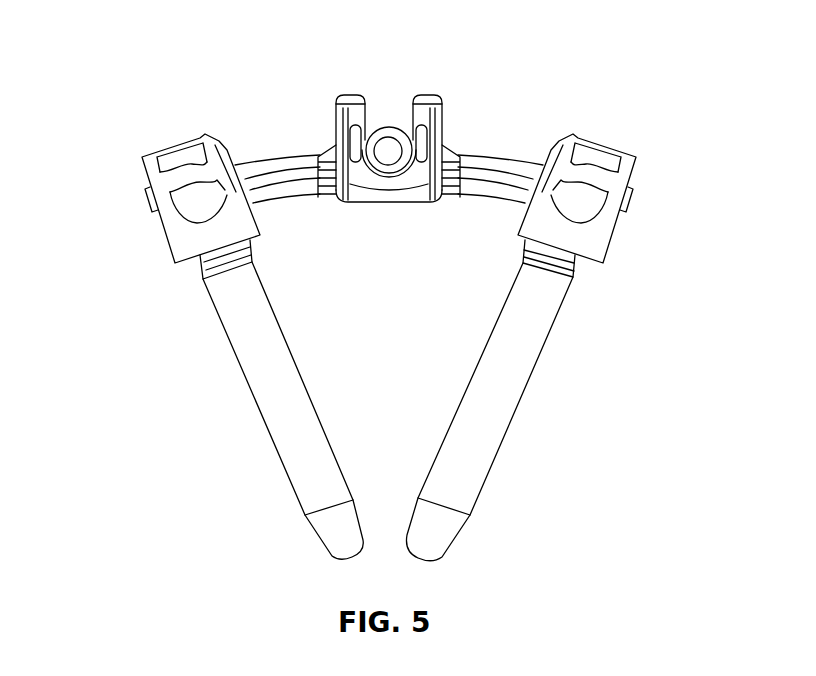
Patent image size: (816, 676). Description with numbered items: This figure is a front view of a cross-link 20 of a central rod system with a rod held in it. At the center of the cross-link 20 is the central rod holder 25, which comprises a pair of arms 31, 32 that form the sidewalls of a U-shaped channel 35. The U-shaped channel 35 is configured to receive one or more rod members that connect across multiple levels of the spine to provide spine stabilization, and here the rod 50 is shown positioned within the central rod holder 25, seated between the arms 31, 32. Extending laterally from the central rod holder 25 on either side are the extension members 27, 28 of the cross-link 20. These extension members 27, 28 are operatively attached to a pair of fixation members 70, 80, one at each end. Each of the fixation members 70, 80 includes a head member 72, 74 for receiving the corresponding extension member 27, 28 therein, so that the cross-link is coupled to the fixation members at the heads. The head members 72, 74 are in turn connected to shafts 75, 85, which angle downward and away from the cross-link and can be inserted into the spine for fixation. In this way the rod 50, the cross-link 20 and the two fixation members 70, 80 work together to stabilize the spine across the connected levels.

The cross-link 20 is at (393, 117).
The central rod holder 25 is at (445, 110).
The extension member 27 is at (292, 197).
The extension member 28 is at (470, 197).
The arm 31 is at (325, 110).
The arm 32 is at (445, 118).
The U-shaped channel 35 is at (370, 102).
The rod 50 is at (388, 127).
The fixation member 70 is at (158, 143).
The head member 72 is at (143, 170).
The head member 74 is at (627, 148).
The shaft 75 is at (236, 363).
The fixation member 80 is at (598, 140).
The shaft 85 is at (535, 368).